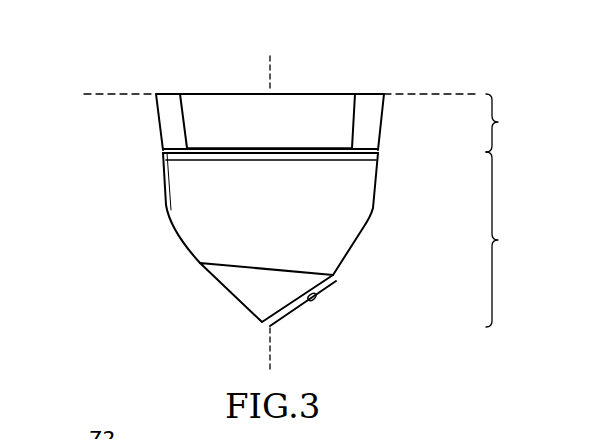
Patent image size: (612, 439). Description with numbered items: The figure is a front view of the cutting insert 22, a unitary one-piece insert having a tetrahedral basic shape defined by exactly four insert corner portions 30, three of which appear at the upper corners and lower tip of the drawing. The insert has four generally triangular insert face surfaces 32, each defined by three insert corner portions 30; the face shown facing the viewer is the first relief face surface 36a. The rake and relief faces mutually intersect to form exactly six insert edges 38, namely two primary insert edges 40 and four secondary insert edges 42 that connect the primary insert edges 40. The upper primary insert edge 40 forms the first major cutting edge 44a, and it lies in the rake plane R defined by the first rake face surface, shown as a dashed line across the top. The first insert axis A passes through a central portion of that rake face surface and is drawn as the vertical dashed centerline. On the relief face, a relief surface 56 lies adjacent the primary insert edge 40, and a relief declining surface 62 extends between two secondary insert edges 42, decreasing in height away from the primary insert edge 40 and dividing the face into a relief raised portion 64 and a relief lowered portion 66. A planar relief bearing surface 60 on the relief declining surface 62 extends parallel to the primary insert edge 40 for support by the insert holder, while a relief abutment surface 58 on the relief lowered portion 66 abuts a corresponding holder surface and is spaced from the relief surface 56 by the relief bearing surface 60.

The cutting insert 22 is at (301, 187).
The insert corner portions 30 is at (274, 181).
The insert face surfaces 32 is at (327, 266).
The first relief face surface 36a is at (322, 207).
The insert edges 38 is at (278, 167).
The primary insert edges 40 is at (291, 94).
The secondary insert edges 42 is at (185, 240).
The first major cutting edge 44a is at (291, 94).
The relief surface 56 is at (200, 110).
The relief abutment surface 58 is at (253, 187).
The relief bearing surface 60 is at (220, 186).
The relief declining surface 62 is at (232, 152).
The relief raised portion 64 is at (510, 123).
The relief lowered portion 66 is at (510, 239).
The rake plane R is at (90, 93).
The first insert axis A is at (272, 201).